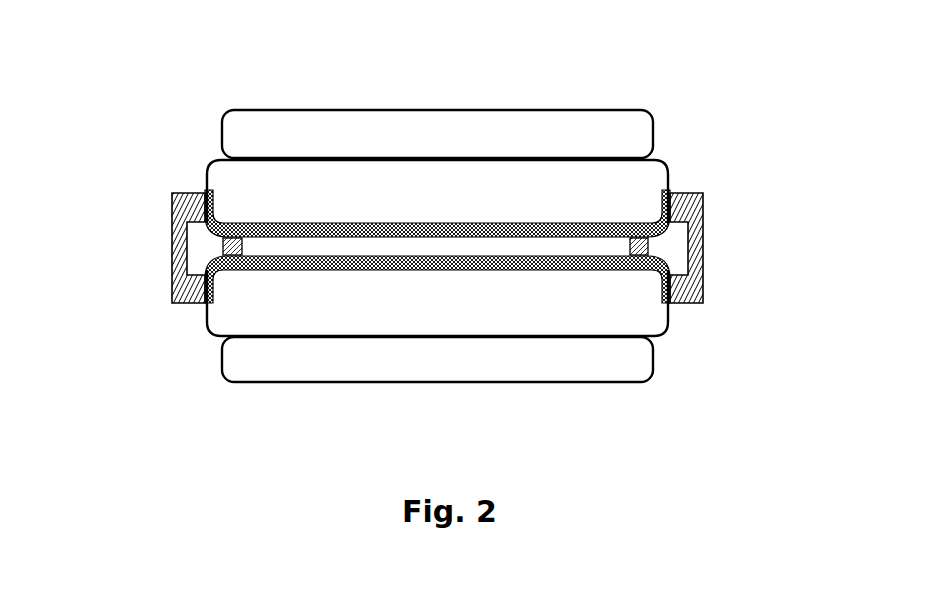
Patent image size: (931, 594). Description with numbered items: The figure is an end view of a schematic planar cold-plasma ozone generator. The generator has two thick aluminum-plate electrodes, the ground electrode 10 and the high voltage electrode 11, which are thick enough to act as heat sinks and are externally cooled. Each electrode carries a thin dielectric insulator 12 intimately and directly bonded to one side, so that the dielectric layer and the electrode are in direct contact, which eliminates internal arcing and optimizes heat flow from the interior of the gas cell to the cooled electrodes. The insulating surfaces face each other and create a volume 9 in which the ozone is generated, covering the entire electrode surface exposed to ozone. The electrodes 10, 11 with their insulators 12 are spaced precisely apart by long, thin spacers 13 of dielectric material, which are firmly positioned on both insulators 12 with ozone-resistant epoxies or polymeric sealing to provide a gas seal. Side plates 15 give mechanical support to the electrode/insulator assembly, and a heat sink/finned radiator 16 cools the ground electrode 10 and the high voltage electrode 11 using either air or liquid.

The volume 9 is at (583, 250).
The ground electrode 10 is at (557, 192).
The high voltage electrode 11 is at (250, 303).
The dielectric insulator 12 is at (632, 230).
The spacer 13 is at (223, 247).
The side plate 15 is at (173, 283).
The heat sink/finned radiator 16 is at (500, 135).